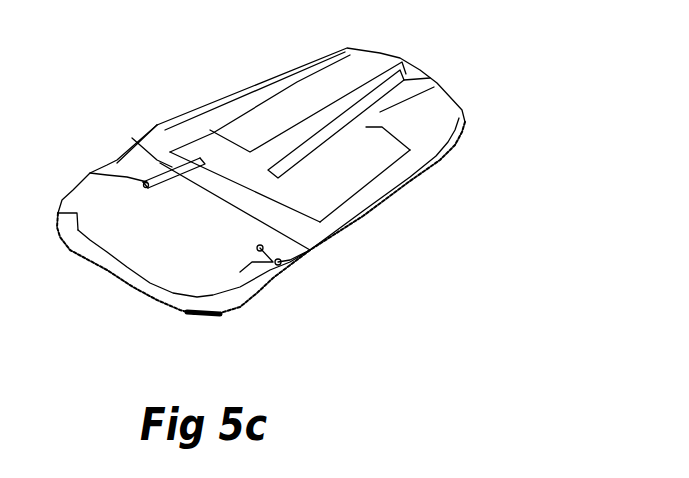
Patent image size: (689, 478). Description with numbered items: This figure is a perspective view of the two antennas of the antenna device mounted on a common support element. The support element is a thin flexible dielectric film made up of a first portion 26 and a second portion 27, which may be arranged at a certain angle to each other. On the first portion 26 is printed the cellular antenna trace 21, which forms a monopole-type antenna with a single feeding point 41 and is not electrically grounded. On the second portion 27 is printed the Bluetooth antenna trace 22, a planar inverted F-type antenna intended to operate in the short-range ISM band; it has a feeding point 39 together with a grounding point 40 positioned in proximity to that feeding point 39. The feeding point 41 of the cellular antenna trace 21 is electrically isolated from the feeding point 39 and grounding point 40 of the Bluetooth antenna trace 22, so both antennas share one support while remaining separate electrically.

The cellular antenna trace 21 is at (297, 144).
The Bluetooth antenna trace 22 is at (260, 183).
The first portion of the flexible dielectric film 26 is at (147, 148).
The second portion of the flexible dielectric film 27 is at (103, 145).
The feeding point 39 is at (321, 262).
The grounding point 40 is at (228, 252).
The feeding point 41 is at (87, 186).